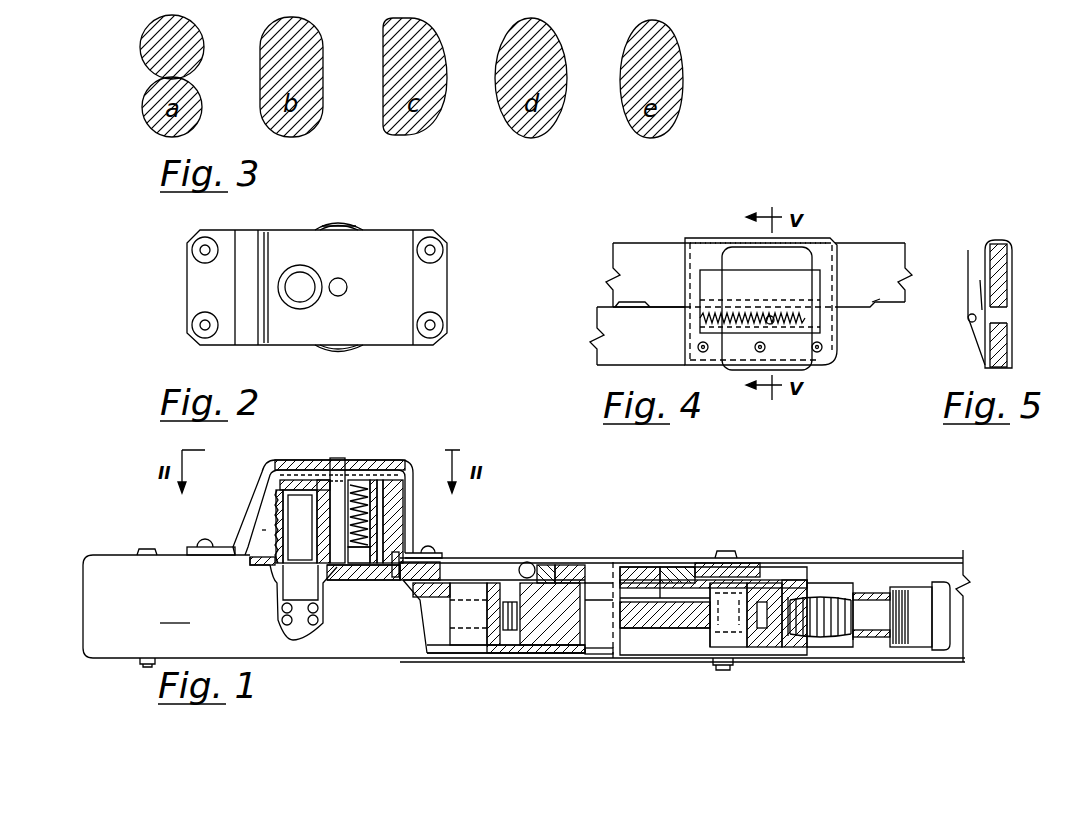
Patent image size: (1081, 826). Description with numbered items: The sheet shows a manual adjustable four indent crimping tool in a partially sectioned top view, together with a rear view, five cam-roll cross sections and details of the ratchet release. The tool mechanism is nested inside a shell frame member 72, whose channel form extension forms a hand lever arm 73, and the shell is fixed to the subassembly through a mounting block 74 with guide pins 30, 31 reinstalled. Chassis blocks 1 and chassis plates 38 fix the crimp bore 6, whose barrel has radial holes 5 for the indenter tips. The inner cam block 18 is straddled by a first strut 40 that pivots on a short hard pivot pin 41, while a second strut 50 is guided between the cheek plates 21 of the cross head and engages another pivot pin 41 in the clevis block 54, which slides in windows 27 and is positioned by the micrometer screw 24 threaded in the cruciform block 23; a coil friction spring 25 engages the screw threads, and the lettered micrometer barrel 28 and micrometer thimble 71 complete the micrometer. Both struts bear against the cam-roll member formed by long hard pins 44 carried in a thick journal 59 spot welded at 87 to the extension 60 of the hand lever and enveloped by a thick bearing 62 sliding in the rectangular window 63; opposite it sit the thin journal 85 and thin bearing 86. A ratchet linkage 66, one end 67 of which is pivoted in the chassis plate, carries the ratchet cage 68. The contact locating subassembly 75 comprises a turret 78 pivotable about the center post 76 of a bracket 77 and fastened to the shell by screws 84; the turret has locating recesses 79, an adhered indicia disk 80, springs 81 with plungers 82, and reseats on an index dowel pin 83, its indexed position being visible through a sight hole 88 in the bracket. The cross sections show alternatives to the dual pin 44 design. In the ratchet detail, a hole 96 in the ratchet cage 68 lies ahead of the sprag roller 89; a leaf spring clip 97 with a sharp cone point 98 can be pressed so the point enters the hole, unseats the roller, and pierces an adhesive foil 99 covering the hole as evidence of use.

In FIG. 1, the chassis block 1 is at (462, 580).
In FIG. 1, the radial holes 5 is at (303, 620).
In FIG. 1, the crimp bore 6 is at (293, 632).
In FIG. 1, the inner cam block 18 is at (505, 602).
In FIG. 1, the cheek plates 21 is at (673, 590).
In FIG. 1, the tapped cruciform block 23 is at (820, 636).
In FIG. 1, the micrometer screw 24 is at (870, 640).
In FIG. 1, the coil friction spring 25 is at (815, 640).
In FIG. 1, the windows 27 is at (700, 640).
In FIG. 1, the micrometer barrel 28 is at (880, 640).
In FIG. 1, the guide pin 30 is at (148, 667).
In FIG. 1, the guide pin 31 is at (722, 658).
In FIG. 1, the chassis plates 38 is at (475, 582).
In FIG. 1, the first strut 40 is at (515, 648).
In FIG. 1, the pivot pin 41 is at (462, 655).
In FIG. 3, the hard pins 44 is at (148, 77).
In FIG. 1, the hard pins 44 is at (637, 558).
In FIG. 1, the second strut 50 is at (648, 628).
In FIG. 1, the clevis block 54 is at (808, 583).
In FIG. 1, the journal 59 is at (600, 578).
In FIG. 1, the extension of hand lever 60 is at (530, 562).
In FIG. 1, the thick bearing 62 is at (520, 560).
In FIG. 1, the rectangular window 63 is at (512, 565).
In FIG. 4, the ratchet linkage 66 is at (832, 388).
In FIG. 1, the ratchet linkage 66 is at (695, 563).
In FIG. 1, the end of elongated bar 67 is at (768, 580).
In FIG. 4, the ratchet cage 68 is at (830, 362).
In FIG. 5, the ratchet cage 68 is at (1010, 263).
In FIG. 1, the micrometer thimble 71 is at (940, 650).
In FIG. 1, the shell frame member 72 is at (526, 606).
In FIG. 1, the hand lever arm 73 is at (860, 558).
In FIG. 1, the mounting block 74 is at (460, 553).
In FIG. 1, the contact locating subassembly 75 is at (255, 526).
In FIG. 1, the center post 76 is at (352, 485).
In FIG. 2, the bracket 77 is at (392, 345).
In FIG. 1, the bracket 77 is at (362, 460).
In FIG. 2, the turret 78 is at (318, 226).
In FIG. 1, the turret 78 is at (278, 482).
In FIG. 1, the locating recesses 79 is at (297, 523).
In FIG. 2, the indicia disk 80 is at (347, 224).
In FIG. 1, the indicia disk 80 is at (298, 480).
In FIG. 1, the springs 81 is at (413, 470).
In FIG. 1, the plungers 82 is at (372, 500).
In FIG. 1, the index dowel pin 83 is at (395, 578).
In FIG. 2, the screws 84 is at (441, 327).
In FIG. 1, the screws 84 is at (205, 546).
In FIG. 1, the thin journal 85 is at (590, 650).
In FIG. 1, the thin bearing 86 is at (527, 654).
In FIG. 1, the spot weld 87 is at (588, 590).
In FIG. 2, the sight hole 88 is at (296, 309).
In FIG. 1, the sight hole 88 is at (337, 475).
In FIG. 4, the sprag roller 89 is at (760, 320).
In FIG. 4, the hole 96 is at (778, 314).
In FIG. 4, the leaf spring clip 97 is at (738, 355).
In FIG. 5, the leaf spring clip 97 is at (966, 300).
In FIG. 4, the cone point 98 is at (775, 324).
In FIG. 5, the cone point 98 is at (975, 312).
In FIG. 4, the adhesive foil 99 is at (708, 290).
In FIG. 5, the adhesive foil 99 is at (978, 278).